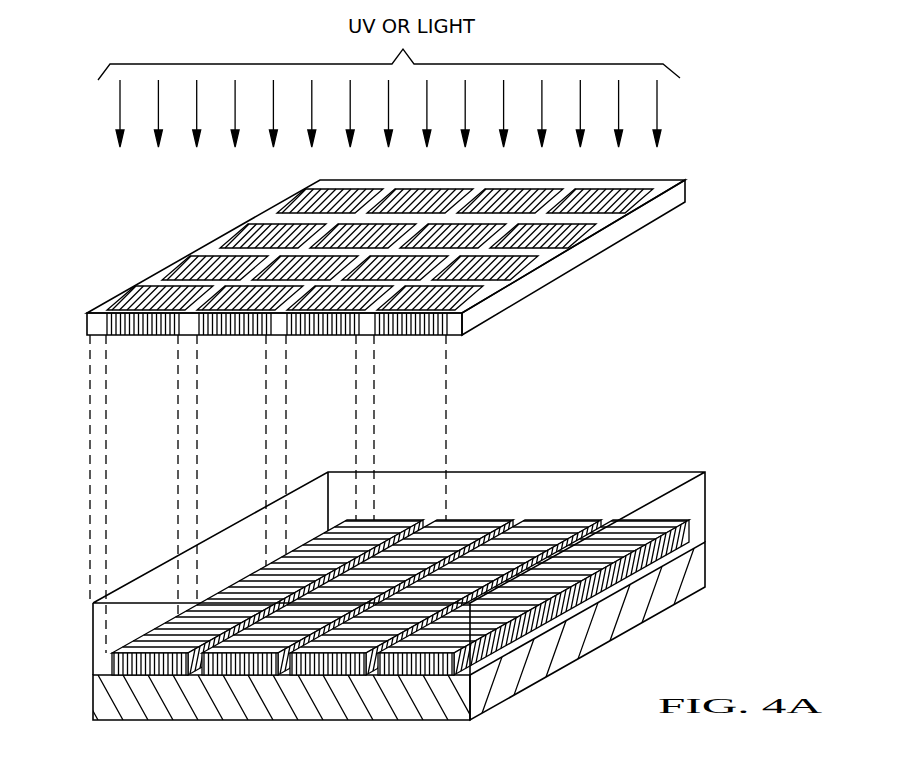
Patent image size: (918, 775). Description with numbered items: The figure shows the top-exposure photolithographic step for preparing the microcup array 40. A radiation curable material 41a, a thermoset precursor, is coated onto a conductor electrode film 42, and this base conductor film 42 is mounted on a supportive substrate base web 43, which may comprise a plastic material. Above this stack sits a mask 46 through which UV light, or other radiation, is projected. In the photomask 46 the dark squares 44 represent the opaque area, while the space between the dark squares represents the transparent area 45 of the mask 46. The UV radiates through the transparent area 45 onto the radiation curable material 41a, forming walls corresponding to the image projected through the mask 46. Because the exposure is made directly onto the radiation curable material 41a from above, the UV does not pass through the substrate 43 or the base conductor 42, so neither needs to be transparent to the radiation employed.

The microcup array 40 is at (405, 569).
The radiation curable material 41a is at (100, 619).
The conductor electrode film 42 is at (117, 660).
The supportive substrate base web 43 is at (102, 702).
The dark squares 44 is at (213, 268).
The transparent area 45 is at (175, 285).
The mask 46 is at (612, 236).